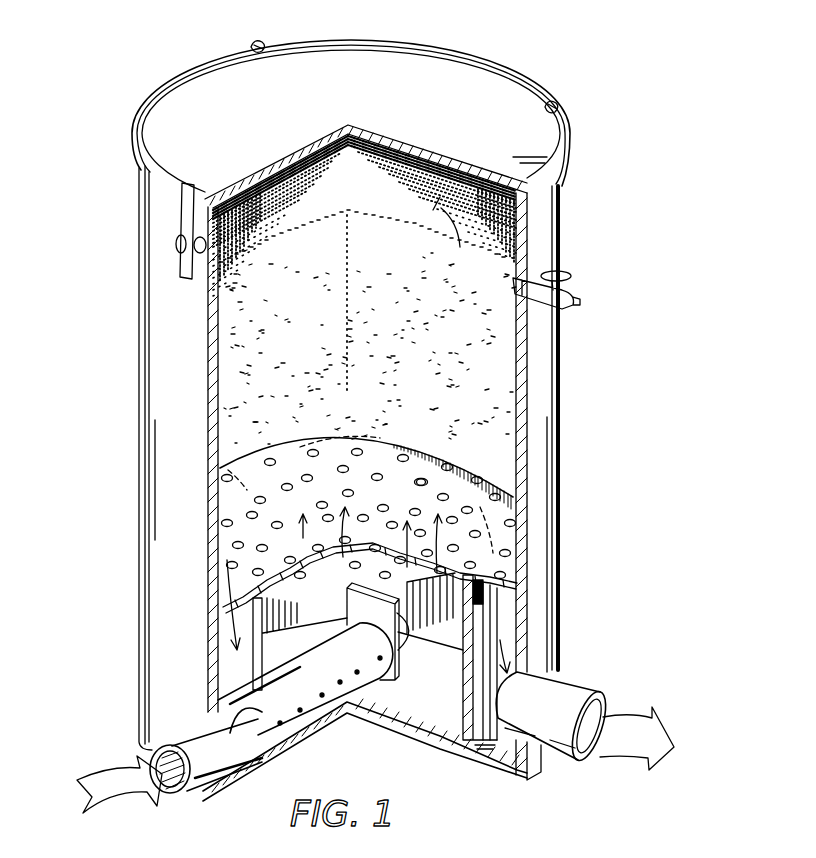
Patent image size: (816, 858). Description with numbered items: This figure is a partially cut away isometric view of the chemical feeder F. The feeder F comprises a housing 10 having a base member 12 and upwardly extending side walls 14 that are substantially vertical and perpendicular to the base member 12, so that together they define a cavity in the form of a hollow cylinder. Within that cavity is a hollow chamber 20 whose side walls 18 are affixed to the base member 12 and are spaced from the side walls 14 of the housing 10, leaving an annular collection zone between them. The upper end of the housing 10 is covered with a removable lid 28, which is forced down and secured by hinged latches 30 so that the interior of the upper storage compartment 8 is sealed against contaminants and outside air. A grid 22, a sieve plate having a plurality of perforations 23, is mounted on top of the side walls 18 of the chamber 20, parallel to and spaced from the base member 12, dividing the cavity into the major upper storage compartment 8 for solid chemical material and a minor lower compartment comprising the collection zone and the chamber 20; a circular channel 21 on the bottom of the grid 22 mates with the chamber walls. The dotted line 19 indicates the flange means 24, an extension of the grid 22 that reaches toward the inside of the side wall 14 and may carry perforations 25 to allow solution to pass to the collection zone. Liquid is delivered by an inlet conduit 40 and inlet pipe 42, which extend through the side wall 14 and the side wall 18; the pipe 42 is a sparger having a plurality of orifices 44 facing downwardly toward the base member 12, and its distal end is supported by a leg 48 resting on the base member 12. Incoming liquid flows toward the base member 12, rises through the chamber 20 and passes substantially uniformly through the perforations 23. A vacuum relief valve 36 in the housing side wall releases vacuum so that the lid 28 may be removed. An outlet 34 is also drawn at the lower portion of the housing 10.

The upper storage compartment 8 is at (362, 191).
The housing 10 is at (580, 469).
The base member 12 is at (500, 758).
The side walls 14 is at (142, 365).
The side walls of chamber 18 is at (240, 677).
The dotted line 19 is at (287, 466).
The hollow chamber 20 is at (449, 704).
The circular channel 21 is at (266, 628).
The grid 22 is at (360, 480).
The perforations 23 is at (467, 508).
The flange means 24 is at (337, 447).
The perforations 25 is at (313, 450).
The lid 28 is at (468, 78).
The latches 30 is at (257, 42).
The outlet pipe 34 is at (593, 685).
The vacuum relief valve 36 is at (574, 278).
The inlet conduit 40 is at (212, 752).
The inlet pipe 42 is at (321, 690).
The orifices 44 is at (322, 700).
The leg 48 is at (376, 594).
The feeder F is at (604, 358).